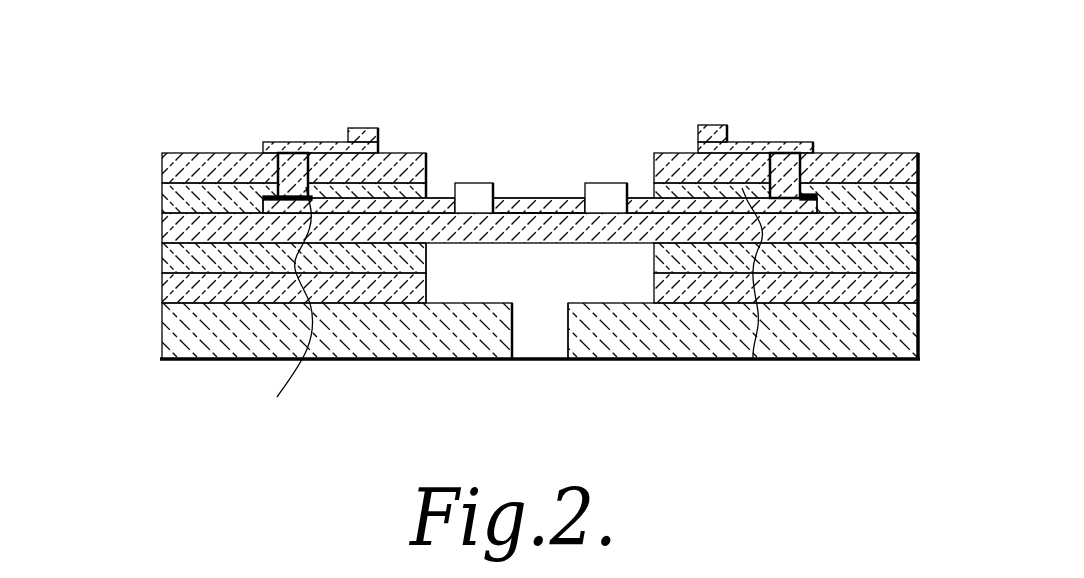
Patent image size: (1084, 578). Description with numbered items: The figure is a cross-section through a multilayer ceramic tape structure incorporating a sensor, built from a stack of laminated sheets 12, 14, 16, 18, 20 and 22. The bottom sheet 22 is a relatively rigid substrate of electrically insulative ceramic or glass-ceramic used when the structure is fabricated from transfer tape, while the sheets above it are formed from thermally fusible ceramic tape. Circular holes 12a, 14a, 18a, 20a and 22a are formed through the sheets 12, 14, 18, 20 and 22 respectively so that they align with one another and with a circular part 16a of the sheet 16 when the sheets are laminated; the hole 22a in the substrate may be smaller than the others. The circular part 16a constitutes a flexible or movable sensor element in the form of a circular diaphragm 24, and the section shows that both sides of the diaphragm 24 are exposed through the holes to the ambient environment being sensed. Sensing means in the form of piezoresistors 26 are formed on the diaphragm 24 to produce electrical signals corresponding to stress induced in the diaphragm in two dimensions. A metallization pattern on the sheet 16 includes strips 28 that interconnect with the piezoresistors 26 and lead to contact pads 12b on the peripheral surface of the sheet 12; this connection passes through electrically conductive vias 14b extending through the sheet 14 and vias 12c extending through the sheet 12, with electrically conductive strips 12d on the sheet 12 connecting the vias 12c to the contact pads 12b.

The sheet 12 is at (162, 173).
The circular hole 12a is at (425, 190).
The contact pad 12b is at (362, 128).
The via 12c is at (278, 174).
The electrically conductive strip 12d is at (282, 153).
The sheet 14 is at (162, 200).
The circular hole 14a is at (467, 183).
The via 14b is at (275, 197).
The sheet 16 is at (162, 227).
The circular part 16a is at (534, 211).
The sheet 18 is at (165, 257).
The circular hole 18a is at (427, 263).
The sheet 20 is at (167, 283).
The circular hole 20a is at (428, 290).
The sheet 22 is at (172, 332).
The hole 22a is at (568, 333).
The circular diaphragm 24 is at (558, 212).
The piezoresistor 26 is at (479, 183).
The strip 28 is at (277, 397).